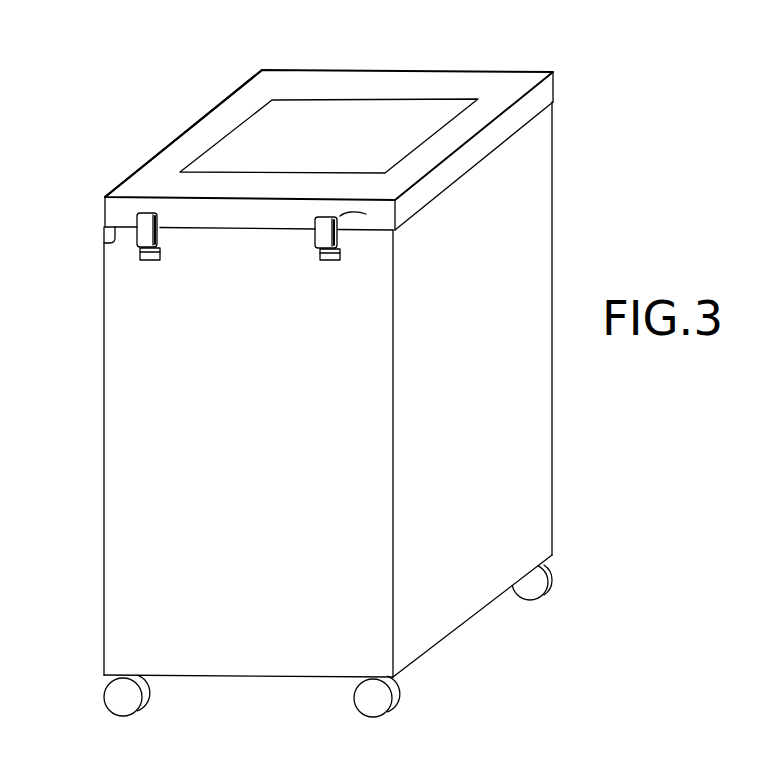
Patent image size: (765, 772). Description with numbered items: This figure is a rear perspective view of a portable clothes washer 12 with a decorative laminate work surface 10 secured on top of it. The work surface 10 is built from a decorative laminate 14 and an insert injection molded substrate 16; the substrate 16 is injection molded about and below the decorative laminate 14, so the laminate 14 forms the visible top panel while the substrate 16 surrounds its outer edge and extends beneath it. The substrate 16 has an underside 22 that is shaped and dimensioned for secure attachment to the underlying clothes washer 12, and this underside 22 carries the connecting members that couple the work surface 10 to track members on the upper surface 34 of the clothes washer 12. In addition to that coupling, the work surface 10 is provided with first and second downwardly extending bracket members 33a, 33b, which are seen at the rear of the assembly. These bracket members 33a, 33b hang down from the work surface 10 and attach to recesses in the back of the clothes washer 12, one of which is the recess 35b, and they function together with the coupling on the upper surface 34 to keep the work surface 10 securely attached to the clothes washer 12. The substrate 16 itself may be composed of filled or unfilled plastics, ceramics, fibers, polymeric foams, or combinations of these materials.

The decorative laminate work surface 10 is at (188, 122).
The portable clothes washer 12 is at (125, 482).
The decorative laminate 14 is at (282, 113).
The insert injection molded substrate 16 is at (510, 86).
The underside 22 is at (106, 241).
The first downwardly extending bracket member 33a is at (158, 230).
The second downwardly extending bracket member 33b is at (314, 238).
The upper surface 34 is at (366, 214).
The recess 35b is at (143, 262).